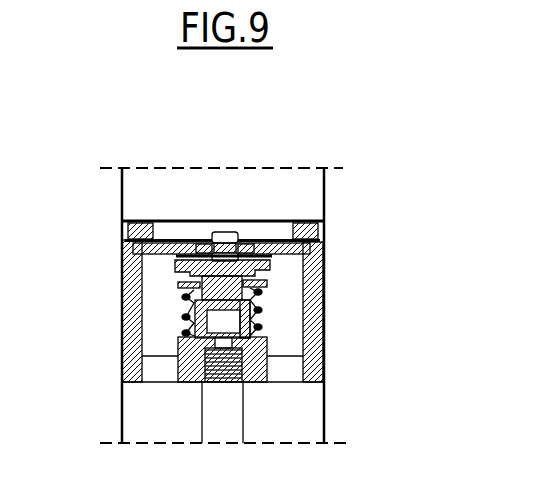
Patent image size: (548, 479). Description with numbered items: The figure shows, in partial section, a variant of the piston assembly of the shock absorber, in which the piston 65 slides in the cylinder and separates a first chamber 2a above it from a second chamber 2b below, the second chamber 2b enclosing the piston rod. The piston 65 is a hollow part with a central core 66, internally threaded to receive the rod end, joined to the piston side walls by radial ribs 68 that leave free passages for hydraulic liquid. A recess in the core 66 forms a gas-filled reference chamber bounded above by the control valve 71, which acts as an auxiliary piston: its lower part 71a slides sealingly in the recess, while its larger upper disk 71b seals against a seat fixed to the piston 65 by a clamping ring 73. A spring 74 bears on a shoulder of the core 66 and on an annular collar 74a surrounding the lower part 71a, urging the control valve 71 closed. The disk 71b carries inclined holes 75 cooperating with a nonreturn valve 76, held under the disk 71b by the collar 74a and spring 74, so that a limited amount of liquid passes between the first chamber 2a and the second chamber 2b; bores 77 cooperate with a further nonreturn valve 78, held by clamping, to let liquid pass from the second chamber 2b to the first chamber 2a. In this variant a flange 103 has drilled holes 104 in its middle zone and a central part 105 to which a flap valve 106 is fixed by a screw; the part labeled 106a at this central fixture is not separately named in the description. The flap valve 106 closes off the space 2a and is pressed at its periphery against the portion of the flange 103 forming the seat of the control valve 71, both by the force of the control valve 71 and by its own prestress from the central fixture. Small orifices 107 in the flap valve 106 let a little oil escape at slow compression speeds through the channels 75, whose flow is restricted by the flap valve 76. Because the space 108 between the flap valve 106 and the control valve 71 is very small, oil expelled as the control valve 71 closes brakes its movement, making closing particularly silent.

The first chamber 2a is at (300, 204).
The second chamber 2b is at (298, 428).
The piston 65 is at (313, 353).
The central core 66 is at (250, 370).
The radial ribs 68 is at (160, 368).
The control valve 71 is at (250, 333).
The lower part of control valve 71a is at (262, 312).
The upper disk 71b is at (177, 270).
The clamping ring 73 is at (137, 228).
The spring 74 is at (188, 317).
The annular collar 74a is at (188, 287).
The inclined holes 75 is at (256, 283).
The nonreturn valve 76 is at (262, 295).
The bores 77 is at (160, 253).
The nonreturn valve 78 is at (167, 237).
The flange 103 is at (310, 242).
The drilled holes 104 is at (185, 245).
The central part 105 is at (208, 252).
The flap valve 106 is at (247, 250).
The bolt 106a is at (227, 248).
The small orifices 107 is at (198, 250).
The space 108 is at (252, 252).